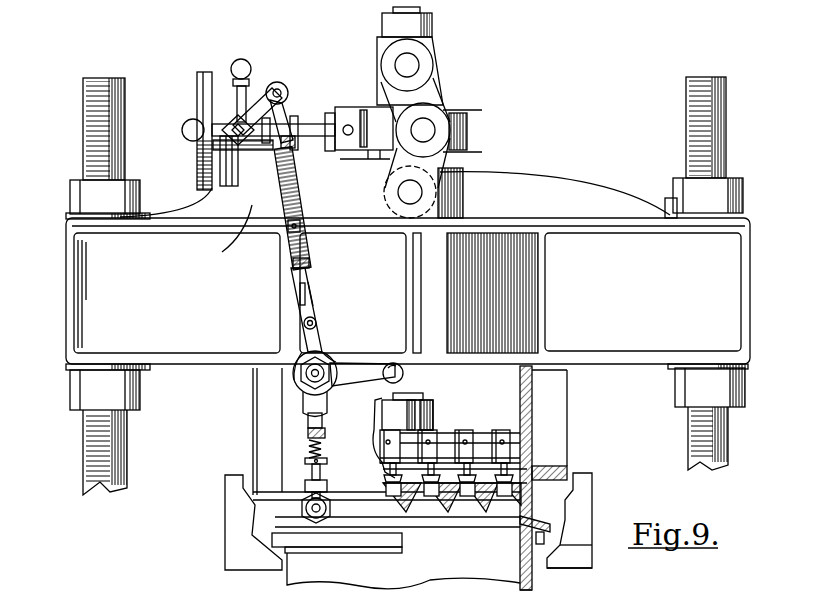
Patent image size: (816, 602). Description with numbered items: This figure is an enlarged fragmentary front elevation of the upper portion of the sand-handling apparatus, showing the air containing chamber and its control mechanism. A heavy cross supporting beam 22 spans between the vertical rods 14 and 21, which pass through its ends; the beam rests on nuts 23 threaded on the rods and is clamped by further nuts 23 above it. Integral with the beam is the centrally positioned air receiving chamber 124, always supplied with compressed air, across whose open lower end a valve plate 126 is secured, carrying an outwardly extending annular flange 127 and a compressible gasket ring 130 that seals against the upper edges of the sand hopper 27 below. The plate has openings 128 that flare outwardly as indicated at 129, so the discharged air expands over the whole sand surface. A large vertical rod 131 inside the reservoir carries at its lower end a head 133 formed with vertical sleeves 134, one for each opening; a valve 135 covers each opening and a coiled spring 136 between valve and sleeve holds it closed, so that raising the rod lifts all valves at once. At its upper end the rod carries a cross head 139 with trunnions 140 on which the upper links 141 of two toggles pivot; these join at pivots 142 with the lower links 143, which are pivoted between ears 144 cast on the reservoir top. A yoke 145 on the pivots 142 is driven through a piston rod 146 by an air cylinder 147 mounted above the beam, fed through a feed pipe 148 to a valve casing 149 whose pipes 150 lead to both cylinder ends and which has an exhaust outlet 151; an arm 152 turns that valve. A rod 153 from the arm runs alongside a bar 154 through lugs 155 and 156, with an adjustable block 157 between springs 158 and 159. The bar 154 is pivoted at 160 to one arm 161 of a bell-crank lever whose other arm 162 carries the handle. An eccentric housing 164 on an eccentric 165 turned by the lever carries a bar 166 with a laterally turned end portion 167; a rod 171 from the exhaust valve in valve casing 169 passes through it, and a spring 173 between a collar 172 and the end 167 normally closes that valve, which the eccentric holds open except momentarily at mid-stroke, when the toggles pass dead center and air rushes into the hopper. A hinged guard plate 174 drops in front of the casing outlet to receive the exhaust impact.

The rod 14 is at (727, 146).
The rod 21 is at (94, 116).
The cross supporting beam 22 is at (641, 338).
The nuts 23 is at (741, 196).
The sand hopper 27 is at (530, 578).
The air receiving chamber 124 is at (524, 407).
The valve plate 126 is at (548, 492).
The annular flange 127 is at (549, 521).
The openings 128 is at (503, 496).
The flared enlargement 129 is at (412, 512).
The compressible gasket ring 130 is at (546, 528).
The rod 131 is at (423, 10).
The head 133 is at (436, 420).
The vertical sleeves 134 is at (503, 447).
The valve 135 is at (512, 470).
The coiled spring 136 is at (392, 480).
The cross head 139 is at (433, 48).
The trunnions 140 is at (412, 65).
The upper links 141 is at (437, 86).
The pivotal connection 142 is at (433, 130).
The links 143 is at (445, 166).
The ears 144 is at (434, 194).
The yoke 145 is at (368, 114).
The piston rod 146 is at (315, 126).
The air cylinder 147 is at (255, 112).
The feed pipe 148 is at (251, 97).
The valve casing 149 is at (238, 172).
The pipes 150 is at (208, 150).
The exhaust outlet 151 is at (218, 239).
The arm 152 is at (284, 91).
The rod 153 is at (300, 291).
The bar 154 is at (314, 298).
The lug 155 is at (296, 144).
The lug 156 is at (312, 279).
The block 157 is at (302, 224).
The spring 158 is at (301, 192).
The spring 159 is at (311, 260).
The pivotal connection 160 is at (318, 321).
The arm of bell crank lever 161 is at (317, 327).
The arm 162 is at (375, 371).
The eccentric housing 164 is at (300, 360).
The eccentric 165 is at (298, 381).
The bar 166 is at (327, 400).
The laterally turned end portion 167 is at (324, 431).
The valve casing 169 is at (331, 505).
The rod 171 is at (323, 473).
The collar 172 is at (305, 461).
The spring 173 is at (305, 446).
The guard plate 174 is at (589, 513).